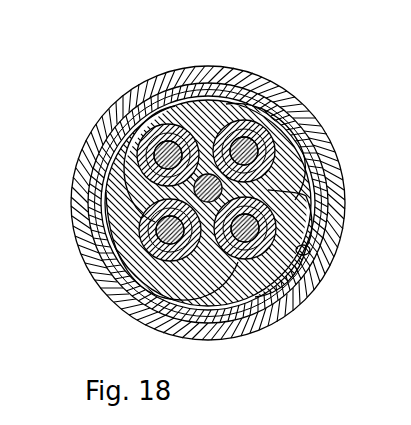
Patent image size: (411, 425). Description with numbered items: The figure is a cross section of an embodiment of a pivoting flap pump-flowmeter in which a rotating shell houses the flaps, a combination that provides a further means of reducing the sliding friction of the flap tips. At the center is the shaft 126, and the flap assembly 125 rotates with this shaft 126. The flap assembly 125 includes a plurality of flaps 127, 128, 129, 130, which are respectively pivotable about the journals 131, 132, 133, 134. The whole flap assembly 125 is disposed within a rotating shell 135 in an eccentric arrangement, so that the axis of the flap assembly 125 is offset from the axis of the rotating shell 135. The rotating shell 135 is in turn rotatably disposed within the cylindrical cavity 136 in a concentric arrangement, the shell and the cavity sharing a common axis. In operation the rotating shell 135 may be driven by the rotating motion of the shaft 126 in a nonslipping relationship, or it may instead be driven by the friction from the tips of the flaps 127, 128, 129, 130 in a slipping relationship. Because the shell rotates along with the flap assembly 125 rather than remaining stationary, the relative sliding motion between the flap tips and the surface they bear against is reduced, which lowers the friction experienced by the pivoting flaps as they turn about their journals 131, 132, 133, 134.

The flap assembly 125 is at (190, 78).
The flap 127 is at (218, 80).
The flap 130 is at (103, 212).
The rotating shell 135 is at (113, 146).
The flap 128 is at (280, 172).
The journal 134 is at (158, 238).
The flap 129 is at (243, 272).
The journal 131 is at (150, 116).
The journal 132 is at (272, 110).
The shaft 126 is at (175, 284).
The journal 133 is at (298, 280).
The cylindrical cavity 136 is at (312, 255).